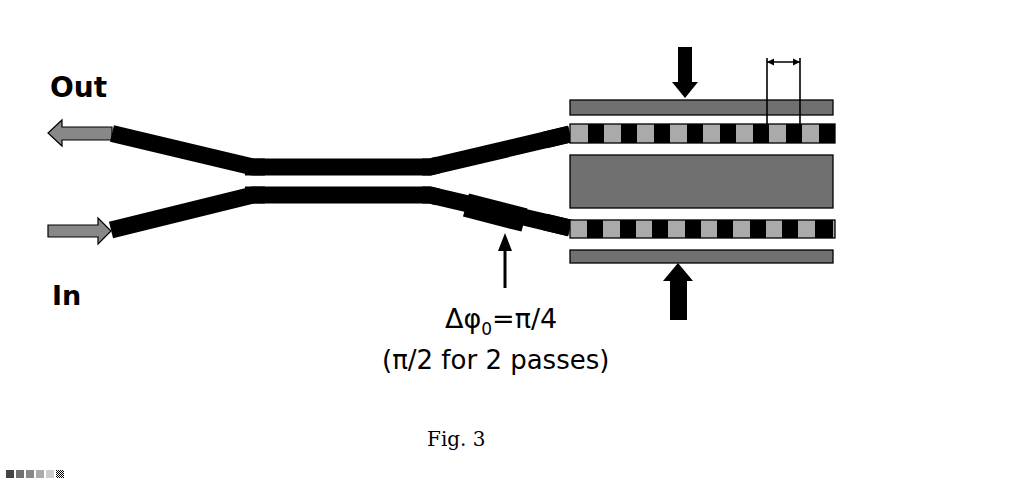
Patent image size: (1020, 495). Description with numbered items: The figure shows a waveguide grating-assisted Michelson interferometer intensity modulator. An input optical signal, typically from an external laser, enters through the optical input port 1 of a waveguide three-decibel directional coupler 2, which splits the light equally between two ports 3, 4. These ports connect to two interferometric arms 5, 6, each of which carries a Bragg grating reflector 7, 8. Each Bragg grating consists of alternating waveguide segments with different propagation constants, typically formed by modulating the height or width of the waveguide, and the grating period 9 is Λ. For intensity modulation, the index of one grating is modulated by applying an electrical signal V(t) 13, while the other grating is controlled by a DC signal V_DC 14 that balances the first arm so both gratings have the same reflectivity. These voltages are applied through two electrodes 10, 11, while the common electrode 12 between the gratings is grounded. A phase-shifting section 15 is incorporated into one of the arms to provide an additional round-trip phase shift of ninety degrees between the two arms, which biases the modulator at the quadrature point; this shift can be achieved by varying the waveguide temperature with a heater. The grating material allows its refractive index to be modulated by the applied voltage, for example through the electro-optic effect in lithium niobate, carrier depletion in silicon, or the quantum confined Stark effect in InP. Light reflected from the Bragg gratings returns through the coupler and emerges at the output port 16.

The optical input port 1 is at (188, 232).
The waveguide 3 dB directional coupler 2 is at (341, 163).
The first coupler port 3 is at (496, 148).
The second coupler port 4 is at (496, 217).
The first interferometric arm 5 is at (550, 124).
The second interferometric arm 6 is at (552, 209).
The first Bragg grating reflector 7 is at (712, 136).
The second Bragg grating reflector 8 is at (713, 231).
The grating period 9 is at (783, 75).
The first electrode 10 is at (701, 96).
The second electrode 11 is at (701, 271).
The common electrode 12 is at (701, 181).
The electrical signal V(t) 13 is at (712, 59).
The DC signal V_DC 14 is at (701, 307).
The phase-shifting section 15 is at (495, 246).
The output port 16 is at (188, 129).